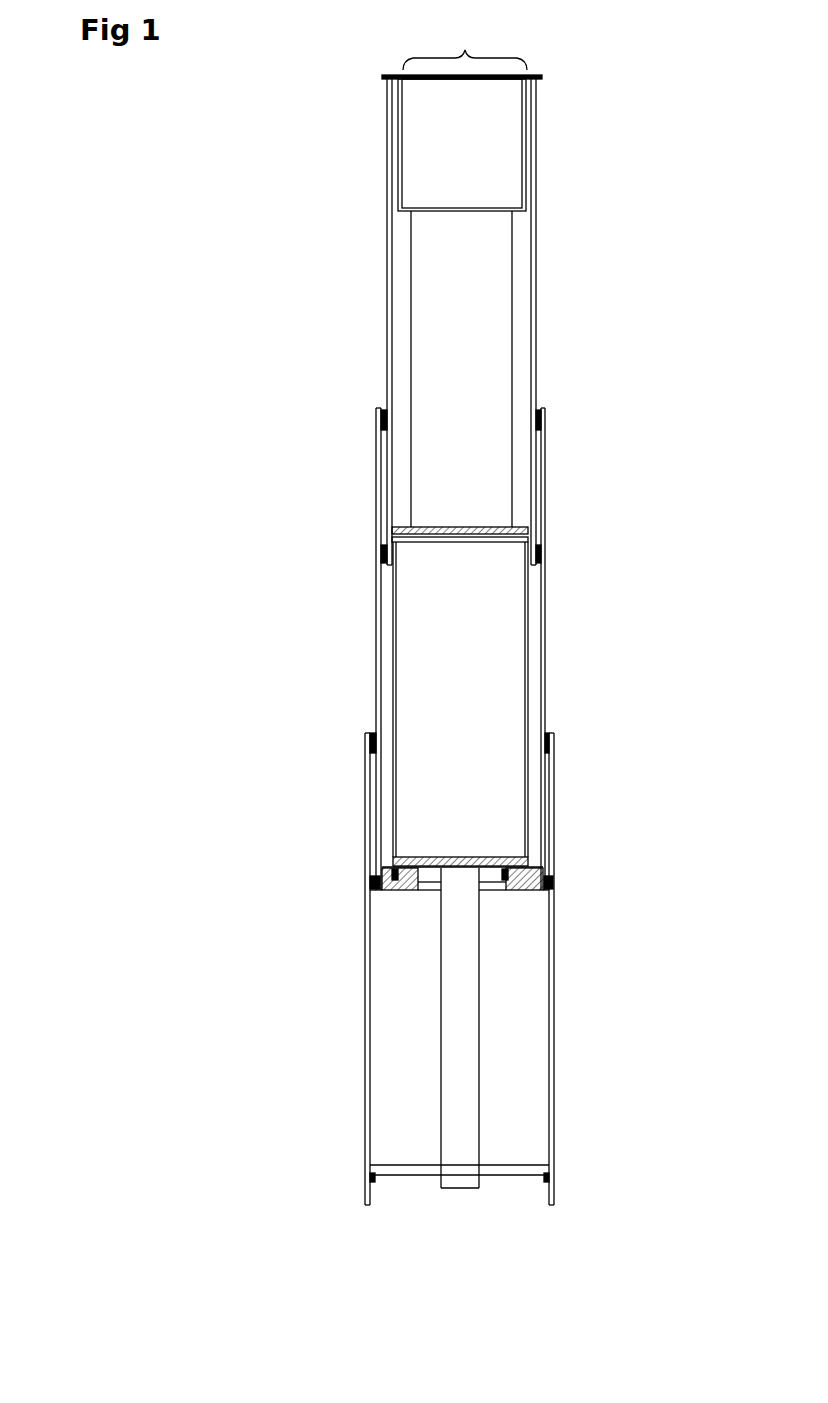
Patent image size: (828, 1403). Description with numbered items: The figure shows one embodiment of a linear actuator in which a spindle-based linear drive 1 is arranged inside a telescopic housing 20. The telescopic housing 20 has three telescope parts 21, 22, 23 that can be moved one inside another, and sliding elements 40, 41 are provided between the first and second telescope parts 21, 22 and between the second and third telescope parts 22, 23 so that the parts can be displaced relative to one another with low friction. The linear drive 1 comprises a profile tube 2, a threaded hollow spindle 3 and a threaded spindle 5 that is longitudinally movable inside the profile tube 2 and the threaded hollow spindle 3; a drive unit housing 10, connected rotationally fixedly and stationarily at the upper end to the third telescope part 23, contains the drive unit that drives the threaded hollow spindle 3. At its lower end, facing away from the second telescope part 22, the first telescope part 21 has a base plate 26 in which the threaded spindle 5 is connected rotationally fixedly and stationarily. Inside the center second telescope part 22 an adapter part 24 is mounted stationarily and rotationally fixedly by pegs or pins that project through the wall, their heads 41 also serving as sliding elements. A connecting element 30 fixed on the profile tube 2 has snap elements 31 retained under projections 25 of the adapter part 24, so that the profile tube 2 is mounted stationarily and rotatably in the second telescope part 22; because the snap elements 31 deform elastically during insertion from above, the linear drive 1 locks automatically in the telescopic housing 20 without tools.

The spindle-based linear drive 1 is at (465, 45).
The telescopic housing 20 is at (348, 155).
The drive unit housing 10 is at (512, 148).
The threaded hollow spindle 3 is at (425, 322).
The third telescope part 23 is at (540, 325).
The second telescope part 22 is at (546, 650).
The first telescope part 21 is at (555, 1038).
The sliding element 40 is at (385, 413).
The profile tube 2 is at (405, 697).
The connecting element 30 is at (424, 912).
The projection 25 is at (410, 862).
The head 41 is at (372, 882).
The snap element 31 is at (410, 886).
The adapter part 24 is at (375, 893).
The threaded spindle 5 is at (452, 1070).
The base plate 26 is at (510, 1172).